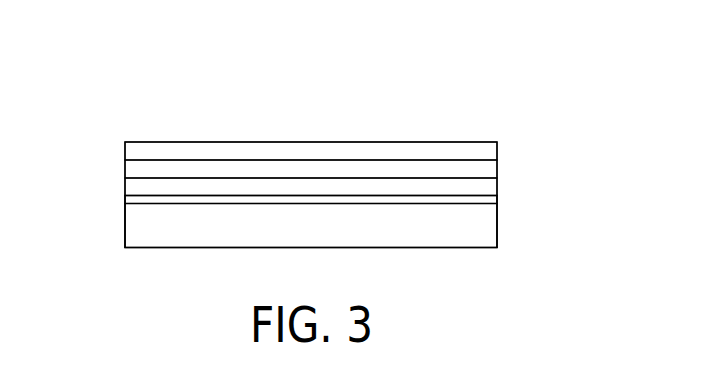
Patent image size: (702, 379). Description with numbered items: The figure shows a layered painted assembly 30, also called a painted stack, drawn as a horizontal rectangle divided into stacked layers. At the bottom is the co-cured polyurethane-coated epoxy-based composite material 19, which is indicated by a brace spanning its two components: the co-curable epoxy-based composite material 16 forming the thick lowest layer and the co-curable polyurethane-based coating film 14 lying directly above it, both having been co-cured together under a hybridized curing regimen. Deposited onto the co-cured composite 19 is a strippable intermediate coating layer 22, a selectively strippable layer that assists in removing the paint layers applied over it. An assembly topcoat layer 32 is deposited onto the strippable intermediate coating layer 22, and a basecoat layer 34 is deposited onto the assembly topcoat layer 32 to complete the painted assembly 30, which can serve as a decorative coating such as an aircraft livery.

The painted assembly 30 is at (131, 109).
The basecoat layer 34 is at (485, 151).
The assembly topcoat layer 32 is at (490, 169).
The strippable intermediate coating layer 22 is at (485, 185).
The co-curable polyurethane-based coating film 14 is at (493, 199).
The co-curable epoxy-based composite material 16 is at (490, 233).
The co-cured polyurethane-coated epoxy-based composite material 19 is at (115, 195).